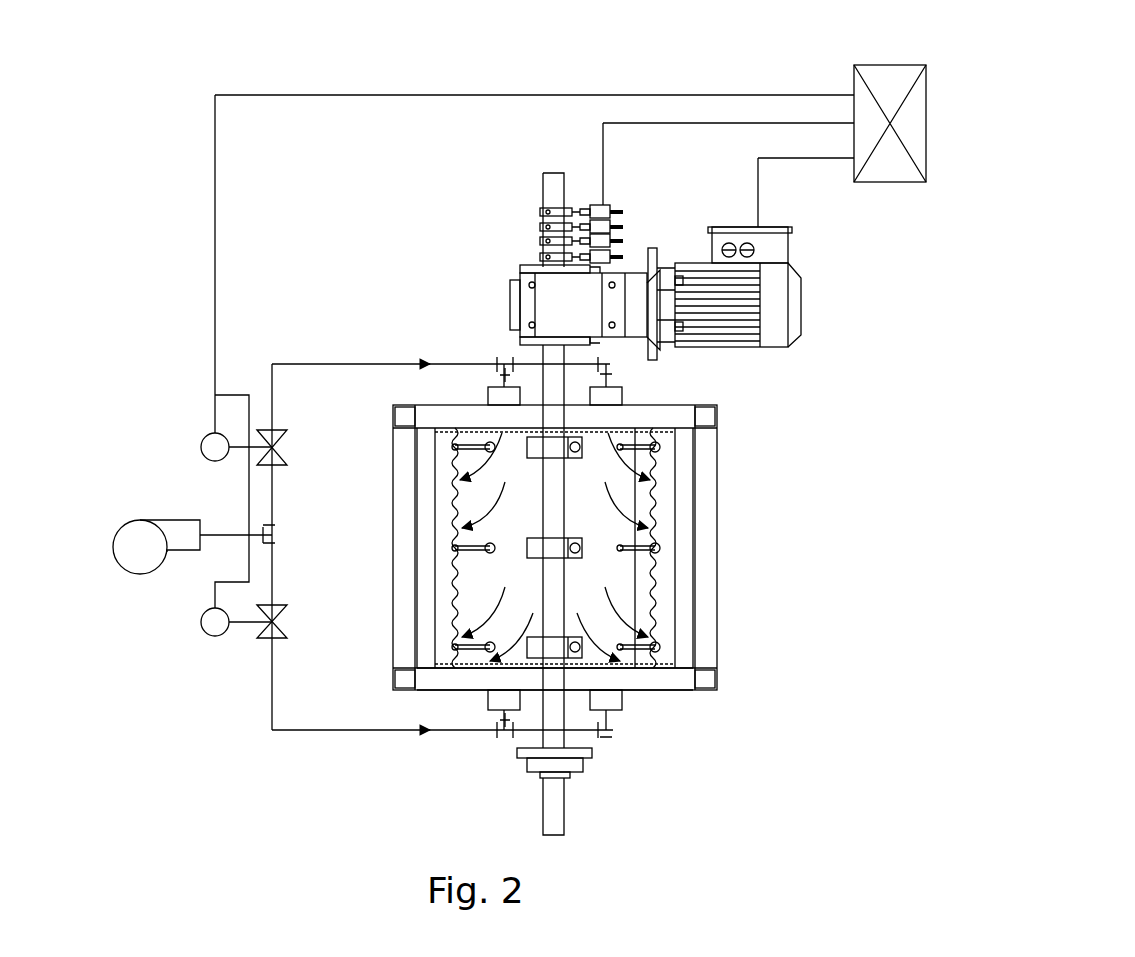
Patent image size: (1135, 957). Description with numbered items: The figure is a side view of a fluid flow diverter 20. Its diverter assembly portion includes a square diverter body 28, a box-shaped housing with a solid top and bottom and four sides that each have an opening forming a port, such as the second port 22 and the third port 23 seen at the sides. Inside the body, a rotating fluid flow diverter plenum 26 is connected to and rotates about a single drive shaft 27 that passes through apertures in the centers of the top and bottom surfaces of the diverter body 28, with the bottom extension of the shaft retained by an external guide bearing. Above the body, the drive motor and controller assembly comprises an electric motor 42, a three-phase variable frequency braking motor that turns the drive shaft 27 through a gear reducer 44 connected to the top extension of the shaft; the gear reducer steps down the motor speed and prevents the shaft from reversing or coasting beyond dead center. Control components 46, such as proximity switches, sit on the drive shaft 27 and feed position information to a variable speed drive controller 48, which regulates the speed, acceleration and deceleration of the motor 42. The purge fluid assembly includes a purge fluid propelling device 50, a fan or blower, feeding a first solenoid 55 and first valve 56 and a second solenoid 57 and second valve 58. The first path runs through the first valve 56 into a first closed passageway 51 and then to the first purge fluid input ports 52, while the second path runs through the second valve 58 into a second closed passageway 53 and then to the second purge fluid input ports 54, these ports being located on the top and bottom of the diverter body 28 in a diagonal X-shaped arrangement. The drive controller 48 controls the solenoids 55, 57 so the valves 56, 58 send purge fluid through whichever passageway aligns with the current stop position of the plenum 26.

The fluid flow diverter 20 is at (305, 13).
The second port 22 is at (717, 547).
The third port 23 is at (390, 545).
The rotating fluid flow diverter plenum 26 is at (533, 592).
The drive shaft 27 is at (550, 185).
The diverter body 28 is at (665, 680).
The electric motor 42 is at (800, 305).
The gear reducer 44 is at (510, 278).
The control components 46 is at (538, 227).
The variable speed drive controller 48 is at (891, 161).
The purge fluid propelling device 50 is at (140, 548).
The first closed passageway 51 is at (402, 363).
The first purge fluid input ports 52 is at (607, 393).
The second closed passageway 53 is at (400, 730).
The second purge fluid input ports 54 is at (605, 698).
The first solenoid 55 is at (217, 450).
The first valve 56 is at (272, 448).
The second solenoid 57 is at (215, 622).
The second valve 58 is at (272, 622).